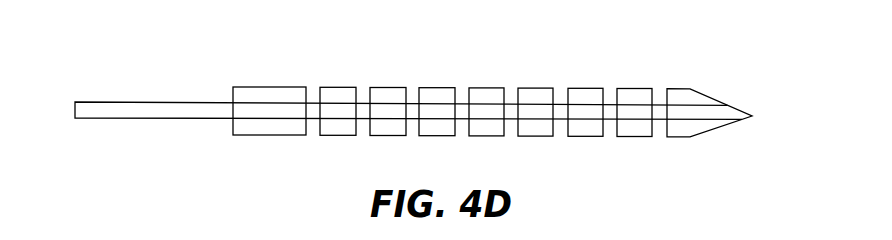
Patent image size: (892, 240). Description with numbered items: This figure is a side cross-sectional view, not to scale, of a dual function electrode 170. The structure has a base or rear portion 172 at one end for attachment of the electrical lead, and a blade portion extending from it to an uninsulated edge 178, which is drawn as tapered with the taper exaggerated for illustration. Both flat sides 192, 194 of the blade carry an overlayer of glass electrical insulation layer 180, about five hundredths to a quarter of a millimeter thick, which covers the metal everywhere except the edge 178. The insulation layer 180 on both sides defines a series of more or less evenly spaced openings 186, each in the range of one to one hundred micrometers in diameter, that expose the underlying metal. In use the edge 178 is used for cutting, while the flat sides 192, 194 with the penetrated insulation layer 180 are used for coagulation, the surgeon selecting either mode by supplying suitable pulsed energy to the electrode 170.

The electrode 170 is at (127, 45).
The base or rear portion 172 is at (155, 120).
The edge 178 is at (745, 120).
The electrical insulation layer 180 is at (278, 86).
The openings 186 is at (510, 87).
The flat side 192 is at (660, 88).
The flat side 194 is at (560, 120).